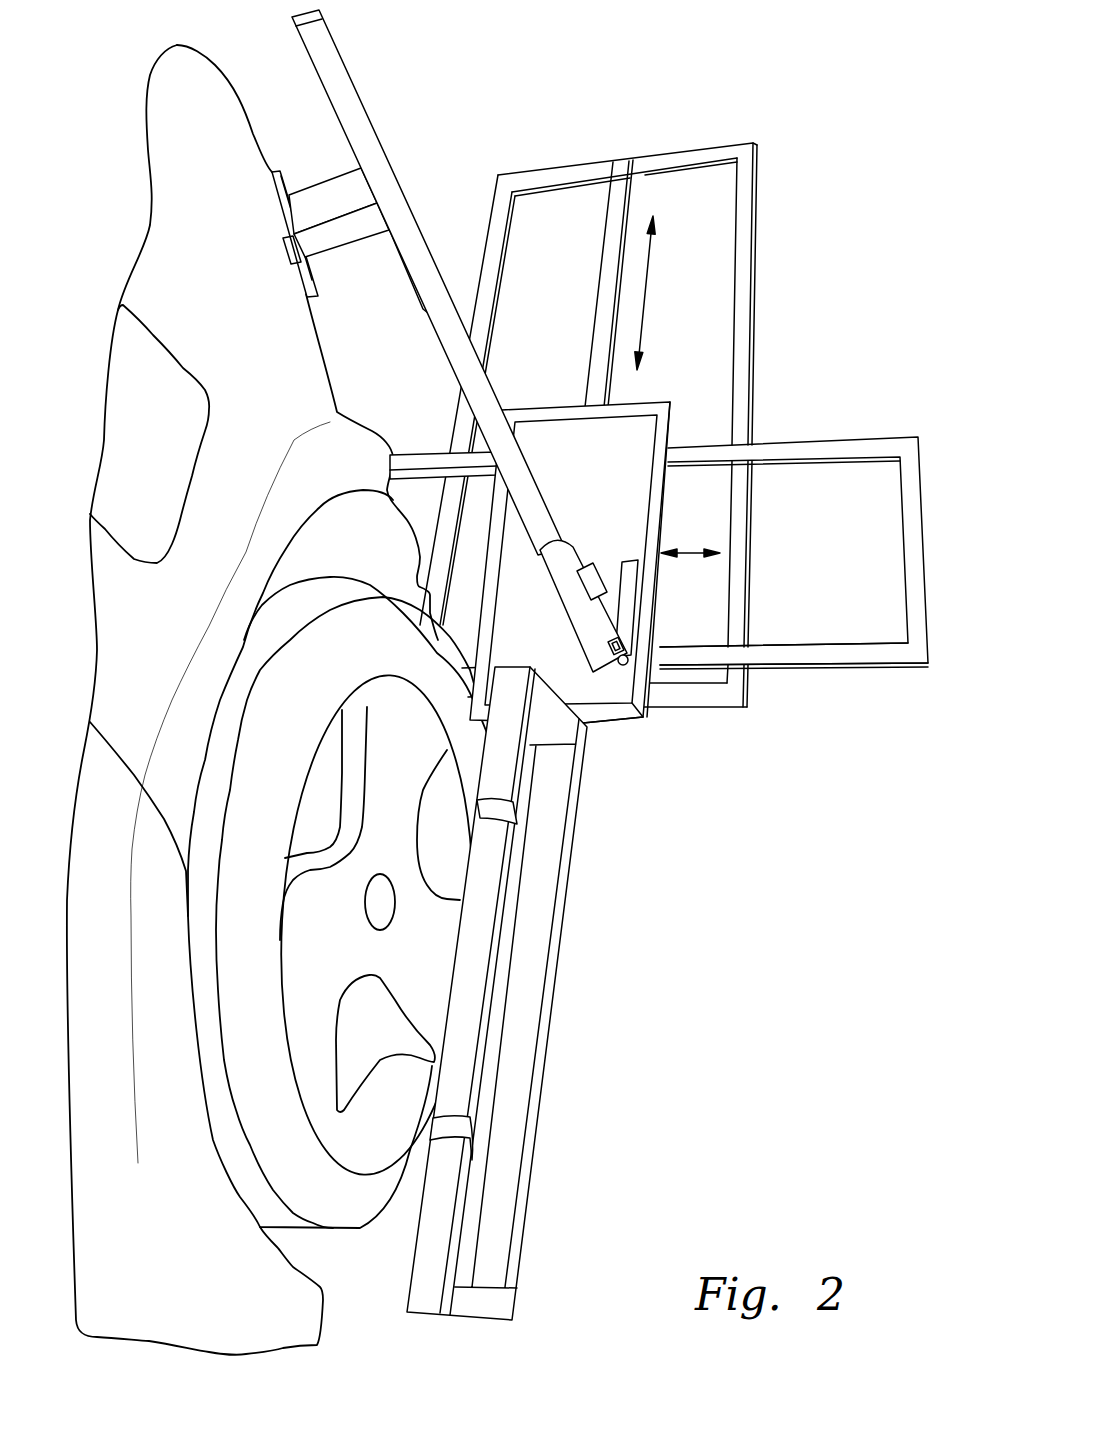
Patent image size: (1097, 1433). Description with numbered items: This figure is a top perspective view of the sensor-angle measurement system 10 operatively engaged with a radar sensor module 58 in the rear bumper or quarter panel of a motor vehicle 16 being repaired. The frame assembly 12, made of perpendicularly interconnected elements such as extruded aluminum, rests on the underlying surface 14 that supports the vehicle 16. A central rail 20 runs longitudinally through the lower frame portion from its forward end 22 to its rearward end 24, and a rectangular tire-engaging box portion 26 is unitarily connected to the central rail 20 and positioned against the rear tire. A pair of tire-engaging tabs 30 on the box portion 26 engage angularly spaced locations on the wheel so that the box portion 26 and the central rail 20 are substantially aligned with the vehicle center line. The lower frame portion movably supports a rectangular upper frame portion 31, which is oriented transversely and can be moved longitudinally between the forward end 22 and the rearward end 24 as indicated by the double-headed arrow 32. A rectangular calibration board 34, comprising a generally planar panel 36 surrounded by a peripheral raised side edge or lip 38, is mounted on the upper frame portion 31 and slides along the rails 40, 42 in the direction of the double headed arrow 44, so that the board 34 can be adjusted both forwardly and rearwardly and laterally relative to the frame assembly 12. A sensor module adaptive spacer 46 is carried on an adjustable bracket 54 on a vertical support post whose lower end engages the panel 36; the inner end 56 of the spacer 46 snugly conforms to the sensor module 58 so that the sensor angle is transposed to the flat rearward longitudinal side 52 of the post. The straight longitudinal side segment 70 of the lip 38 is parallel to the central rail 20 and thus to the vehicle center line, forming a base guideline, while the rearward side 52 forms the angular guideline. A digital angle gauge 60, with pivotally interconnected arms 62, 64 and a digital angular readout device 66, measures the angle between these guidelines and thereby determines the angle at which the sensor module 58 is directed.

The system 10 is at (797, 294).
The frame assembly 12 is at (594, 424).
The underlying surface 14 is at (757, 897).
The motor vehicle 16 is at (238, 361).
The central rail 20 is at (598, 285).
The forward end 22 is at (708, 712).
The rearward end 24 is at (570, 165).
The tire-engaging box portion 26 is at (539, 993).
The tire-engaging tabs 30 is at (513, 820).
The upper frame portion 31 is at (797, 552).
The double-headed arrow 32 is at (650, 283).
The calibration board 34 is at (670, 412).
The panel 36 is at (648, 589).
The peripheral raised side edge or lip 38 is at (633, 723).
The rail 40 is at (810, 667).
The rail 42 is at (797, 460).
The double headed arrow 44 is at (692, 547).
The sensor module adaptive spacer 46 is at (343, 190).
The outer or rearward longitudinal side 52 is at (537, 483).
The adjustable bracket 54 is at (397, 263).
The inner end 56 is at (295, 220).
The radar sensor module 58 is at (288, 258).
The digital angle gauge 60 is at (607, 597).
The arm 62 is at (635, 557).
The arm 64 is at (540, 550).
The digital angular readout device 66 is at (617, 680).
The longitudinal side segment 70 is at (663, 430).